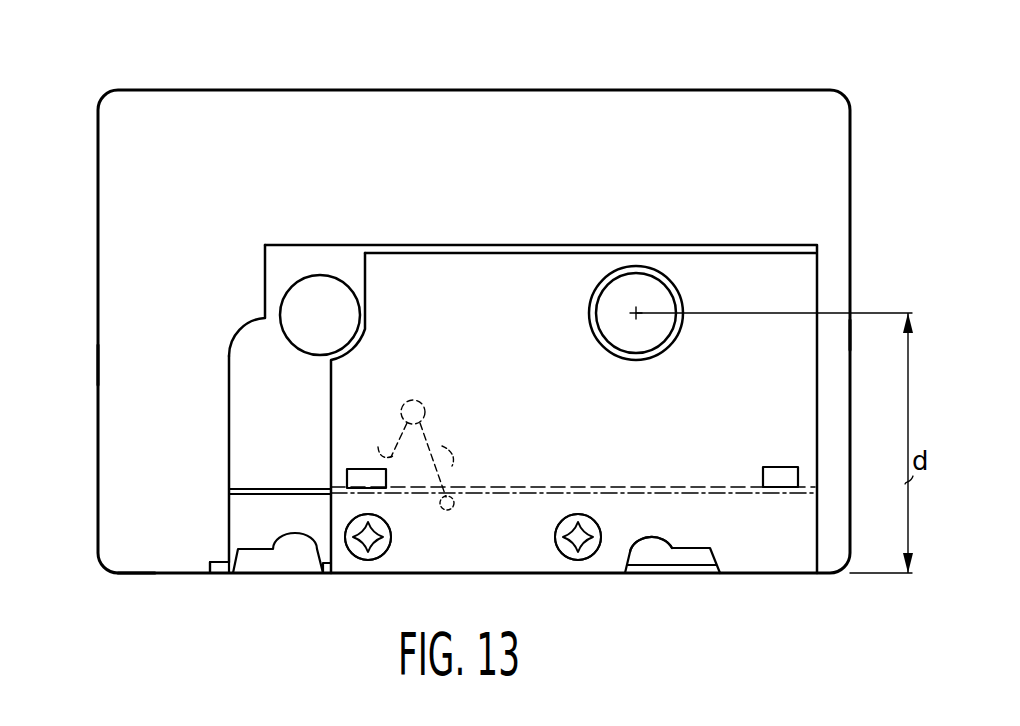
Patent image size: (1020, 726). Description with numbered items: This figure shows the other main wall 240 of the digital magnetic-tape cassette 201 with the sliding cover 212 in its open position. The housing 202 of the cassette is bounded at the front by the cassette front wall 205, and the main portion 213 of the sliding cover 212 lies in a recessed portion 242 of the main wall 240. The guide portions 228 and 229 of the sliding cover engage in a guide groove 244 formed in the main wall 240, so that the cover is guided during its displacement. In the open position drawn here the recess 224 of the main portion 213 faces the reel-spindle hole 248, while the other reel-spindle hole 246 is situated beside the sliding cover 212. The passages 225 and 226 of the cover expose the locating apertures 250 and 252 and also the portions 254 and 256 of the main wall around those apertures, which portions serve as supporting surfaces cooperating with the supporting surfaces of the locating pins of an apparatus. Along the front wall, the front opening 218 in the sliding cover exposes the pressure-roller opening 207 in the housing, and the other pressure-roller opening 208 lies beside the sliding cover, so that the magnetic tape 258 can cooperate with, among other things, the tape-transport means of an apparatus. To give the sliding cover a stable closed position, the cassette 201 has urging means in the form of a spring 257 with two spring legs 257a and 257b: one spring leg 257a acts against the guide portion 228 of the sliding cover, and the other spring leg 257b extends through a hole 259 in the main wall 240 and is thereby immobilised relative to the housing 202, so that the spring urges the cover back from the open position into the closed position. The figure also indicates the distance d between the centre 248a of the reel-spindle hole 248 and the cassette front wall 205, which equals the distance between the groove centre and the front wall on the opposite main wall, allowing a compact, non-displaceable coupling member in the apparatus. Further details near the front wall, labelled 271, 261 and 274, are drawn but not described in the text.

The main wall 240 is at (255, 108).
The housing 202 is at (98, 361).
The cassette front wall 205 is at (130, 577).
The cassette 201 is at (853, 331).
The main portion 213 is at (723, 277).
The sliding cover 212 is at (366, 263).
The recessed portion 242 is at (245, 405).
The reel-spindle hole 246 is at (306, 292).
The reel-spindle hole 248 is at (633, 288).
The recess 224 is at (598, 337).
The centre 248a is at (638, 316).
The guide groove 244 is at (287, 488).
The spring 257 is at (415, 405).
The spring leg 257a is at (367, 437).
The spring leg 257b is at (471, 441).
The hole 259 is at (455, 504).
The guide portion 228 is at (355, 489).
The guide portion 229 is at (783, 488).
The locating aperture 250 is at (378, 528).
The passage 226 is at (392, 539).
The portion of the main wall 254 is at (362, 548).
The portion of the main wall 256 is at (592, 528).
The passage 225 is at (558, 548).
The locating aperture 252 is at (575, 530).
The tab 271 is at (208, 563).
The tab 261 is at (217, 575).
The pressure-roller opening 208 is at (287, 556).
The notch 274 is at (327, 569).
The pressure-roller opening 207 is at (650, 557).
The front opening 218 is at (663, 534).
The magnetic tape 258 is at (685, 569).